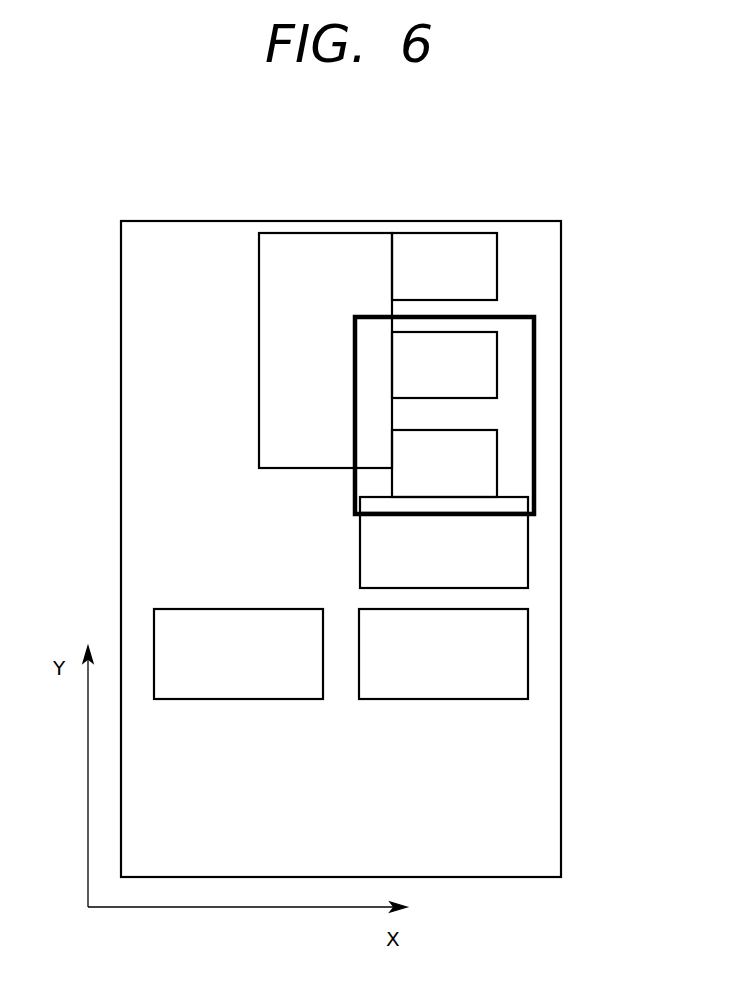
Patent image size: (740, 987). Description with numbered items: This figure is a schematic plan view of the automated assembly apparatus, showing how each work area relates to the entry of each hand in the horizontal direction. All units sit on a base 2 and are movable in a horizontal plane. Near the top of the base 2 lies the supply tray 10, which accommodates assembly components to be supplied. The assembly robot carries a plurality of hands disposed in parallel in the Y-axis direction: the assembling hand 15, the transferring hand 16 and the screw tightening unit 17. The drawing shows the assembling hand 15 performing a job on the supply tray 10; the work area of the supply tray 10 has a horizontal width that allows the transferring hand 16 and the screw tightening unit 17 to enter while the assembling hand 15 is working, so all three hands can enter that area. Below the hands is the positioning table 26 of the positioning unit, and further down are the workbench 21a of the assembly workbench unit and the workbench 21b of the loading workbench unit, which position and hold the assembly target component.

The base 2 is at (545, 813).
The supply tray 10 is at (310, 252).
The assembling hand 15 is at (488, 271).
The transferring hand 16 is at (483, 369).
The screw tightening unit 17 is at (483, 463).
The positioning table 26 is at (513, 556).
The workbench 21a is at (513, 653).
The workbench 21b is at (182, 630).